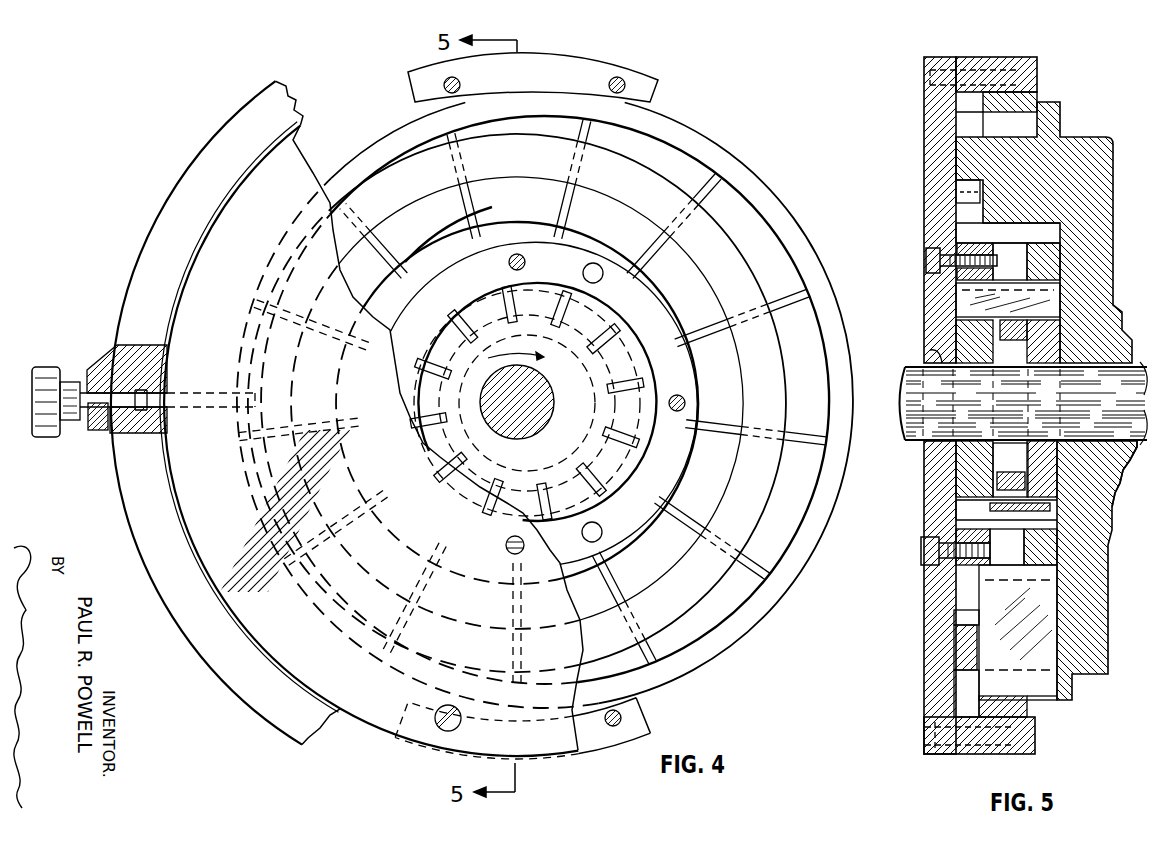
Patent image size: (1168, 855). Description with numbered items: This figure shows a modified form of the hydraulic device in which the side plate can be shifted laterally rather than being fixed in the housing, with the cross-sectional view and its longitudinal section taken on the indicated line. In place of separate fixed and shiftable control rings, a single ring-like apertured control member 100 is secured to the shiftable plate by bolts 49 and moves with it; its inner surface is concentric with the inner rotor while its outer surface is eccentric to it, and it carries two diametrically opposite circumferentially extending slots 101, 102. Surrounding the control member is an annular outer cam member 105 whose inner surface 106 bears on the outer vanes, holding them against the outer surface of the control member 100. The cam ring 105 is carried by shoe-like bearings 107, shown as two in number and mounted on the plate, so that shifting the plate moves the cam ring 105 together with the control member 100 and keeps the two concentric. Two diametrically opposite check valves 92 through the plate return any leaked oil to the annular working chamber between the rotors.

In FIG. 4, the ring-like apertured control member 100 is at (487, 286).
In FIG. 5, the ring-like apertured control member 100 is at (1060, 262).
In FIG. 4, the check valves 92 is at (584, 270).
In FIG. 4, the bolts 49 is at (506, 545).
In FIG. 4, the outer cam member 105 is at (694, 136).
In FIG. 5, the outer cam member 105 is at (1037, 102).
In FIG. 4, the bearings 107 is at (660, 84).
In FIG. 5, the bearings 107 is at (1037, 72).
In FIG. 5, the inner surface 106 is at (1010, 118).
In FIG. 5, the slot 101 is at (1020, 270).
In FIG. 5, the slot 102 is at (1018, 554).